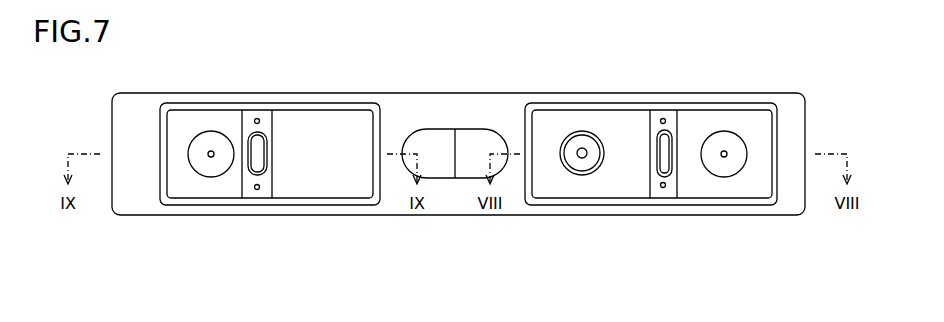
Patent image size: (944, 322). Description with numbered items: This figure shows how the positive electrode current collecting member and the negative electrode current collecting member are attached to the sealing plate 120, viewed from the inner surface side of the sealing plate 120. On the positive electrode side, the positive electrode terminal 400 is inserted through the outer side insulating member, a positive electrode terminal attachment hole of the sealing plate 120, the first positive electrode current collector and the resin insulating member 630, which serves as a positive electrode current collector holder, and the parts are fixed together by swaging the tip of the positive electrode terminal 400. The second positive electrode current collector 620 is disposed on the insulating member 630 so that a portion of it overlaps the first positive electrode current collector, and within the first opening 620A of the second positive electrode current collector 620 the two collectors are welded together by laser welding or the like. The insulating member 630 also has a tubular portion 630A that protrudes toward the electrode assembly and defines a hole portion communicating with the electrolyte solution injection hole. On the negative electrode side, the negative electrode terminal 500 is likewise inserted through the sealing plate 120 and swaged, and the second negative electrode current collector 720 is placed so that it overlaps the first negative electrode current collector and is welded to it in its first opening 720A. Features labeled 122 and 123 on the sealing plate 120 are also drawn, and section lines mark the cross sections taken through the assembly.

The sealing plate 120 is at (393, 100).
The connection hole 122 is at (584, 150).
The opening 123 is at (478, 140).
The positive electrode terminal 400 is at (724, 142).
The negative electrode terminal 500 is at (211, 142).
The second positive electrode current collector 620 is at (630, 122).
The first opening 620A is at (652, 150).
The insulating member 630 is at (533, 205).
The tubular portion 630A is at (583, 160).
The second negative electrode current collector 720 is at (318, 122).
The first opening 720A is at (259, 158).